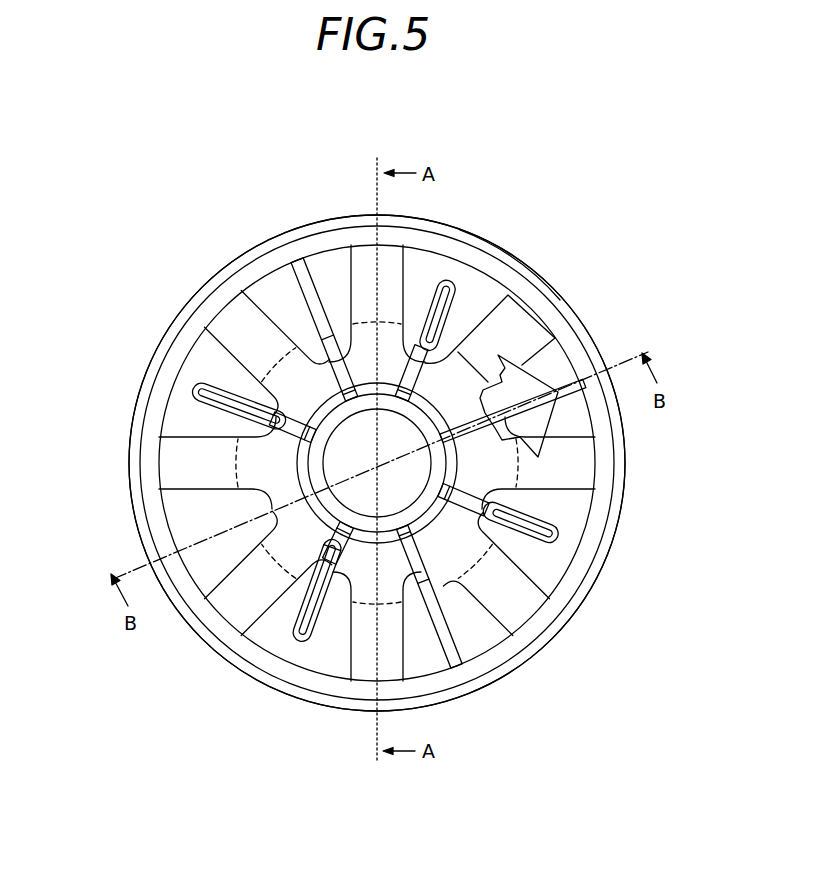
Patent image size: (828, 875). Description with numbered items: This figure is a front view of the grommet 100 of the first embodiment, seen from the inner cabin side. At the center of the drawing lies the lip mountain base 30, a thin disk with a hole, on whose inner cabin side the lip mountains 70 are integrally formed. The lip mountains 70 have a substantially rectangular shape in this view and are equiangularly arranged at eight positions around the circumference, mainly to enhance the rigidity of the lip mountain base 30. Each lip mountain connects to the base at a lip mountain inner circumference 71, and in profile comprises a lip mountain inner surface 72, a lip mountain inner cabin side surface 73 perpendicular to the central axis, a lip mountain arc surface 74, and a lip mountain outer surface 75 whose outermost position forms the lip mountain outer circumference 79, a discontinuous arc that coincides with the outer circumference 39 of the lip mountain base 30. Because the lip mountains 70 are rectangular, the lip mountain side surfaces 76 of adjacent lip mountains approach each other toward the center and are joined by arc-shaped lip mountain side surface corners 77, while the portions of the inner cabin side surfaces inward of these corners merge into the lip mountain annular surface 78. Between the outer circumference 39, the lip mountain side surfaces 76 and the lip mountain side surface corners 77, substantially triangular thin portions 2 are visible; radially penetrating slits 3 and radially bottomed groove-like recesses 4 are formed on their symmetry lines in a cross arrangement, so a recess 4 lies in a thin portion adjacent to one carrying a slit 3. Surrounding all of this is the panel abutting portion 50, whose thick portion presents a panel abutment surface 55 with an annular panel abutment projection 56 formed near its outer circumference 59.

The rotary device 100 is at (162, 152).
The lip mountain base 30 is at (516, 273).
The thin portion 2 is at (438, 282).
The slit 3 is at (453, 272).
The recess 4 is at (422, 292).
The outer circumference 39 is at (525, 265).
The panel abutting portion 50 is at (432, 463).
The outer circumference 59 is at (618, 513).
The panel abutment projection 56 is at (624, 548).
The panel abutment surface 55 is at (695, 508).
The lip mountains 70 is at (301, 459).
The lip mountain inner circumference 71 is at (200, 462).
The lip mountain inner surface 72 is at (300, 436).
The lip mountain inner cabin side surface 73 is at (285, 356).
The lip mountain arc surface 74 is at (250, 342).
The lip mountain outer surface 75 is at (290, 290).
The lip mountain side surface 76 is at (255, 492).
The lip mountain side surface corner 77 is at (230, 515).
The lip mountain annular surface 78 is at (207, 597).
The lip mountain outer circumference 79 is at (243, 283).